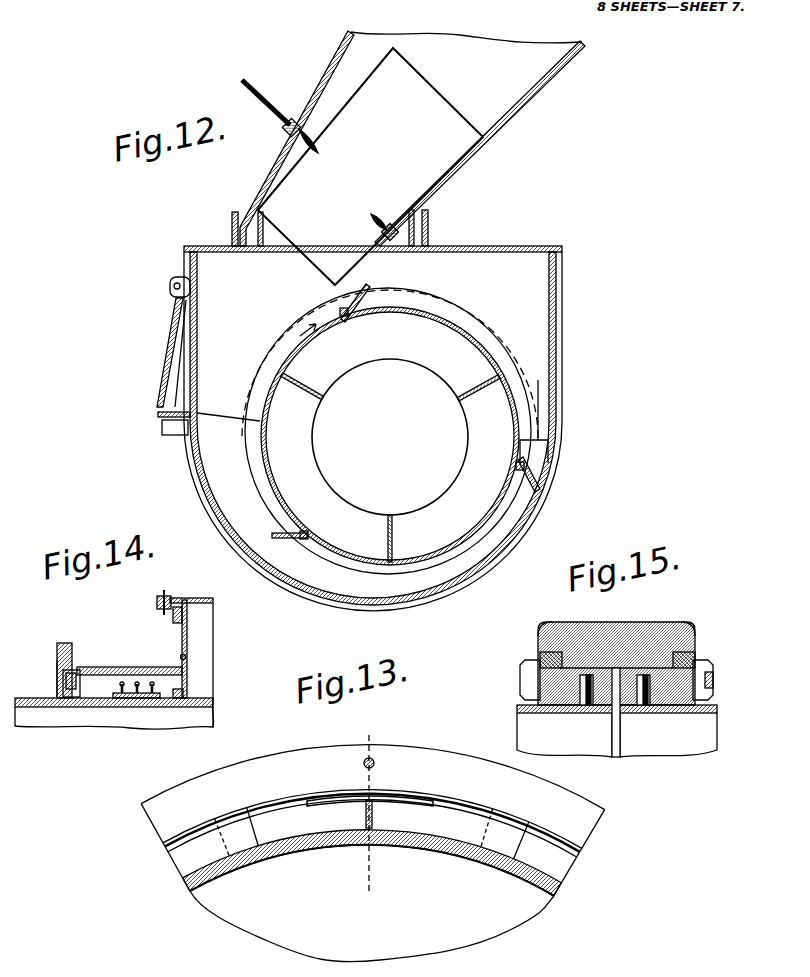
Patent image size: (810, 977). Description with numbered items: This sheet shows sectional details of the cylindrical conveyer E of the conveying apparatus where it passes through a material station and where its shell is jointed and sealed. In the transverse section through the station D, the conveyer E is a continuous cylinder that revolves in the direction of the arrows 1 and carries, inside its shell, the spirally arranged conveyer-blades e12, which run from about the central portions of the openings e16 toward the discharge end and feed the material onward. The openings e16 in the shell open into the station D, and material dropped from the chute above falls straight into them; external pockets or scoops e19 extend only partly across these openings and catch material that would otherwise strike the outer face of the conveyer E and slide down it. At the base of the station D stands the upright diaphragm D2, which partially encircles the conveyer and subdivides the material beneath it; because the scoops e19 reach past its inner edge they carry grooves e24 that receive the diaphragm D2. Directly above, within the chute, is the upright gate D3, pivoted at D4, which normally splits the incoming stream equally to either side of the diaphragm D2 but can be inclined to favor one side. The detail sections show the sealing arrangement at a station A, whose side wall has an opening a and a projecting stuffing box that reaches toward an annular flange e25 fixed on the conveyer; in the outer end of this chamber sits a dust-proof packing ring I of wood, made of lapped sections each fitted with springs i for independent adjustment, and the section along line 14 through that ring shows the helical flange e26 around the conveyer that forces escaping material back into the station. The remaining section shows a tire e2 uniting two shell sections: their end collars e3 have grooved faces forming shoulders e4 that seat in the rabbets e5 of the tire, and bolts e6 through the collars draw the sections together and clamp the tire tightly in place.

In FIG. 12, the station D is at (483, 260).
In FIG. 12, the upright diaphragm D2 is at (203, 477).
In FIG. 12, the upright gate D3 is at (370, 166).
In FIG. 12, the pivot D4 is at (303, 135).
In FIG. 12, the conveyer E is at (512, 405).
In FIG. 14, the conveyer E is at (214, 708).
In FIG. 15, the conveyer E is at (520, 728).
In FIG. 13, the conveyer E is at (442, 855).
In FIG. 12, the conveyer-blades e12 is at (304, 388).
In FIG. 12, the openings e16 is at (396, 308).
In FIG. 12, the pockets or scoops e19 is at (273, 552).
In FIG. 12, the grooves e24 is at (343, 303).
In FIG. 12, the arrows 1 is at (299, 333).
In FIG. 14, the station A is at (212, 619).
In FIG. 14, the opening a is at (184, 690).
In FIG. 14, the annular flanges e25 is at (58, 645).
In FIG. 14, the helical flanges or shoulders e26 is at (152, 682).
In FIG. 14, the springs i is at (77, 690).
In FIG. 13, the springs i is at (390, 797).
In FIG. 14, the packing rings I is at (57, 689).
In FIG. 13, the packing rings I is at (372, 829).
In FIG. 13, the section line 14 is at (371, 810).
In FIG. 15, the tires e2 is at (600, 622).
In FIG. 15, the collars or flanges e3 is at (538, 690).
In FIG. 15, the projecting shoulders e4 is at (545, 657).
In FIG. 15, the annular grooves or rabbets e5 is at (548, 643).
In FIG. 15, the bolts e6 is at (713, 678).